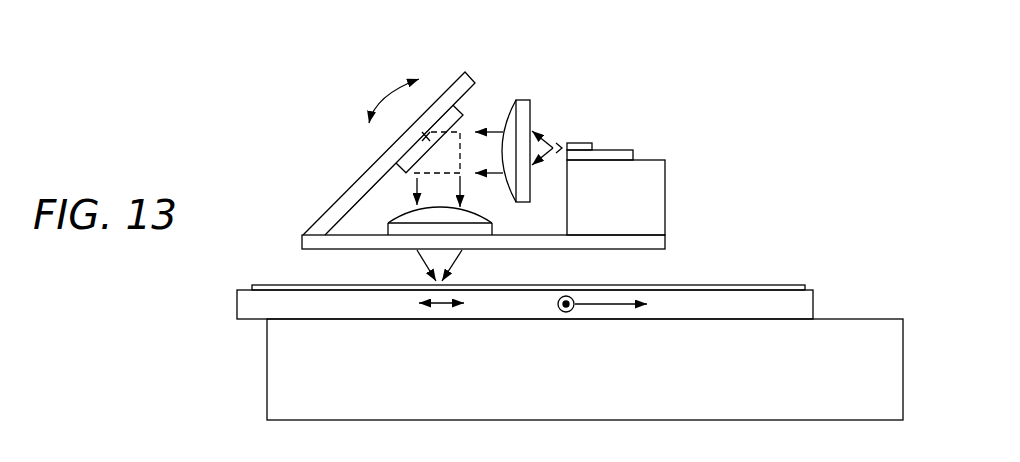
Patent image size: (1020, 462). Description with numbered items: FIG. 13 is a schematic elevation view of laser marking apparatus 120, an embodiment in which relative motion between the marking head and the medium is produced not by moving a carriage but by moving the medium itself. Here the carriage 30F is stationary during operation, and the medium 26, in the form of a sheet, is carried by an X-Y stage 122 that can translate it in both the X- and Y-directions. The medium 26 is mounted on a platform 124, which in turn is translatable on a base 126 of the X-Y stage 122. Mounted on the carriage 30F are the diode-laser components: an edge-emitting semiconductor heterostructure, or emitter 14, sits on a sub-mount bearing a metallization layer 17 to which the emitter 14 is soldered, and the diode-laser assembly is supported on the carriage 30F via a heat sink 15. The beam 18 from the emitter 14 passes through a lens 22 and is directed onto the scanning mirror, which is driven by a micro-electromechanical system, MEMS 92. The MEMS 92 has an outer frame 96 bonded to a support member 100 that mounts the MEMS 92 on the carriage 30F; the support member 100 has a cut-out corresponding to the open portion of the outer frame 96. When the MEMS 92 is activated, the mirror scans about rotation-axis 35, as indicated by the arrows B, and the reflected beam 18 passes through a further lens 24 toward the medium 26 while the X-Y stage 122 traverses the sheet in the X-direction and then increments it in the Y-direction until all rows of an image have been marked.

The laser marking apparatus 120 is at (681, 85).
The support member 100 is at (460, 82).
The micro-electromechanical system (MEMS) 92 is at (481, 103).
The outer frame 96 is at (380, 177).
The rotation-axis 35 is at (422, 136).
The light beam 18 is at (548, 130).
The focusing lens 24 is at (408, 214).
The collimating lens 22 is at (517, 99).
The emitter 14 is at (577, 143).
The metallization layer 17 is at (610, 150).
The heat sink 15 is at (645, 187).
The carriage 30F is at (669, 236).
The medium 26 is at (725, 285).
The platform 124 is at (243, 307).
The X-Y stage 122 is at (247, 344).
The base 126 is at (278, 385).